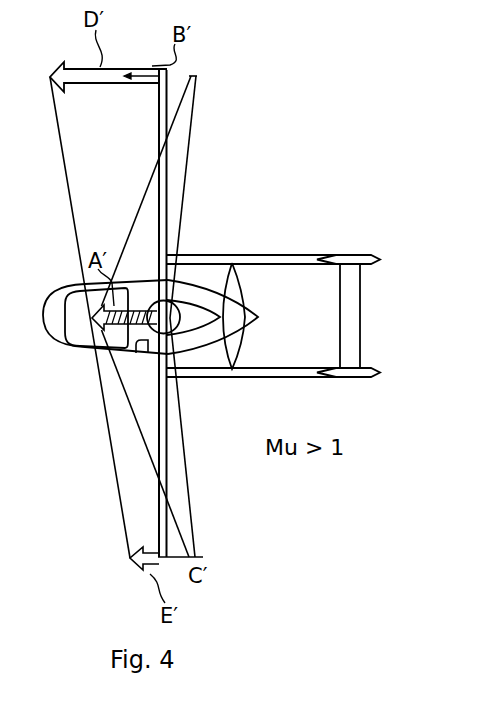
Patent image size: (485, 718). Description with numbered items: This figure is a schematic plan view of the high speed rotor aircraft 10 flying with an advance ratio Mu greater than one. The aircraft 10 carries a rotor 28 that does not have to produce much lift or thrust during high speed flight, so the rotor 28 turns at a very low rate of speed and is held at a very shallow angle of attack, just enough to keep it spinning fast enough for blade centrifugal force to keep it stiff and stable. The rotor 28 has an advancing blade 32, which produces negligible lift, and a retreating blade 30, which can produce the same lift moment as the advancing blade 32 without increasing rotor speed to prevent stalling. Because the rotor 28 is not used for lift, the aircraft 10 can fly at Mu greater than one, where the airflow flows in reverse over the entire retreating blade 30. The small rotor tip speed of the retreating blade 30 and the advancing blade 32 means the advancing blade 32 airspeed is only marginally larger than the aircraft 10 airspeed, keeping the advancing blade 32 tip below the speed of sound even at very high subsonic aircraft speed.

The aircraft 10 is at (200, 297).
The rotor 28 is at (172, 194).
The retreating blade 30 is at (167, 508).
The advancing blade 32 is at (168, 108).